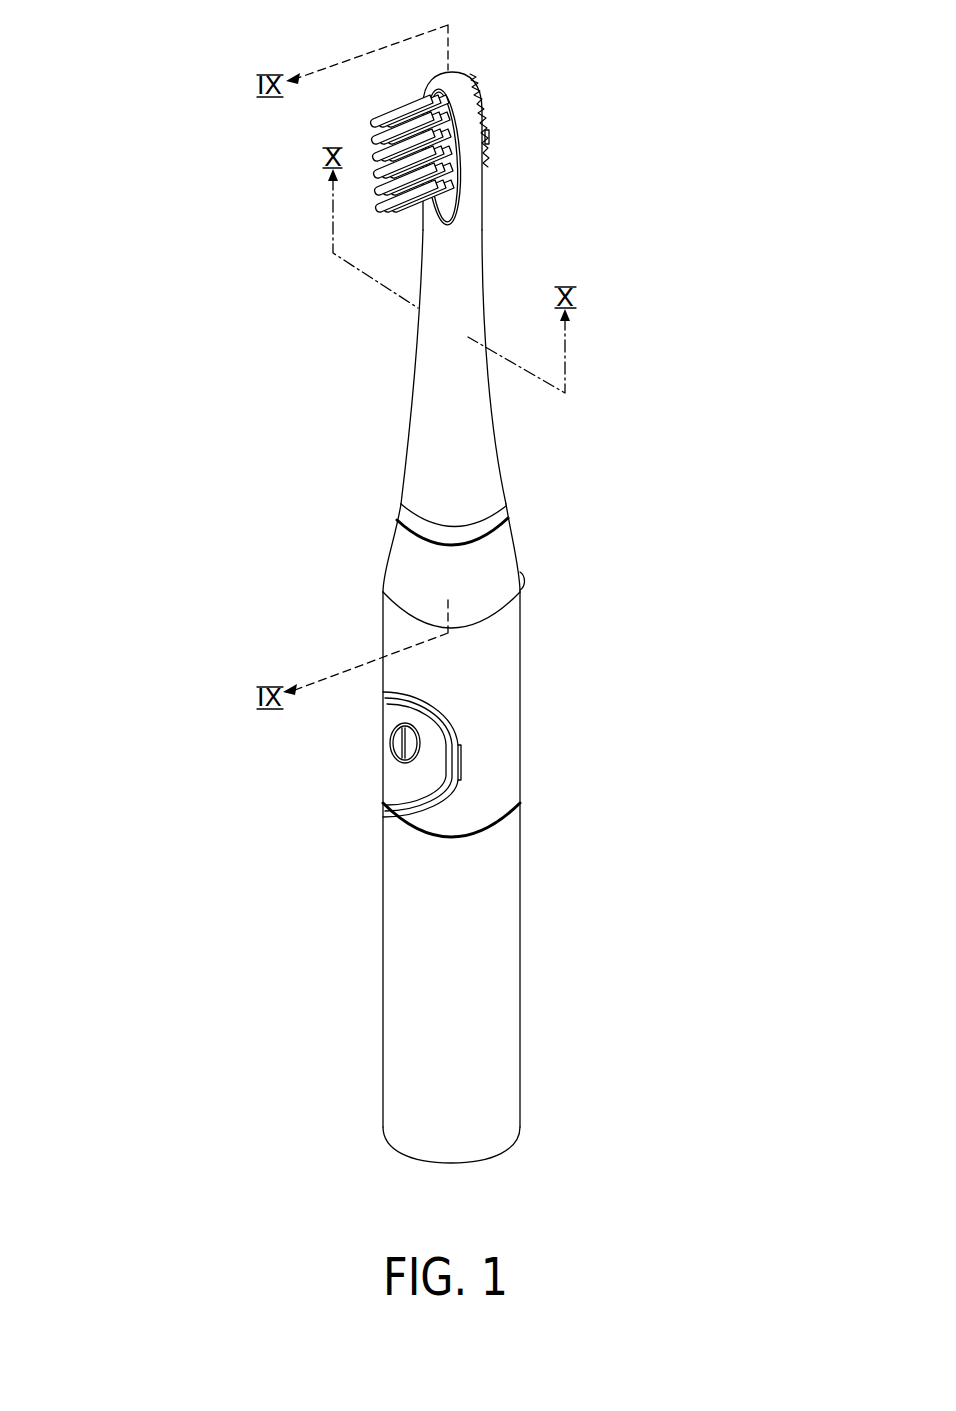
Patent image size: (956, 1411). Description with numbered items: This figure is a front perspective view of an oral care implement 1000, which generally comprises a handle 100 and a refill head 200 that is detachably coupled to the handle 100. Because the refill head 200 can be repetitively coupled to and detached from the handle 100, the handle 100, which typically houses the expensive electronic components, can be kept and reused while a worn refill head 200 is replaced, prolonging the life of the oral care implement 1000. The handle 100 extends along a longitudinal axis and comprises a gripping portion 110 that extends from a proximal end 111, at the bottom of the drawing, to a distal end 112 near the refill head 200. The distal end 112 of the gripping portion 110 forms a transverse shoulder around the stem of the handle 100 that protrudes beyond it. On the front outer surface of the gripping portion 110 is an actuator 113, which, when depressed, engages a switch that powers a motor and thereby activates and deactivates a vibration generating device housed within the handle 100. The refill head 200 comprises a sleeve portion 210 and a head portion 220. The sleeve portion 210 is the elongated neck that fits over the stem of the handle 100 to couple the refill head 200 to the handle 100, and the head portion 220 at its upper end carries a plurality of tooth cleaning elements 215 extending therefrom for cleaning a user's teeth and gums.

The oral care implement 1000 is at (145, 199).
The handle 100 is at (530, 863).
The gripping portion 110 is at (445, 972).
The proximal end 111 is at (463, 1163).
The distal end 112 is at (455, 545).
The actuator 113 is at (396, 750).
The refill head 200 is at (491, 237).
The sleeve portion 210 is at (445, 397).
The tooth cleaning elements 215 is at (386, 103).
The head portion 220 is at (470, 147).